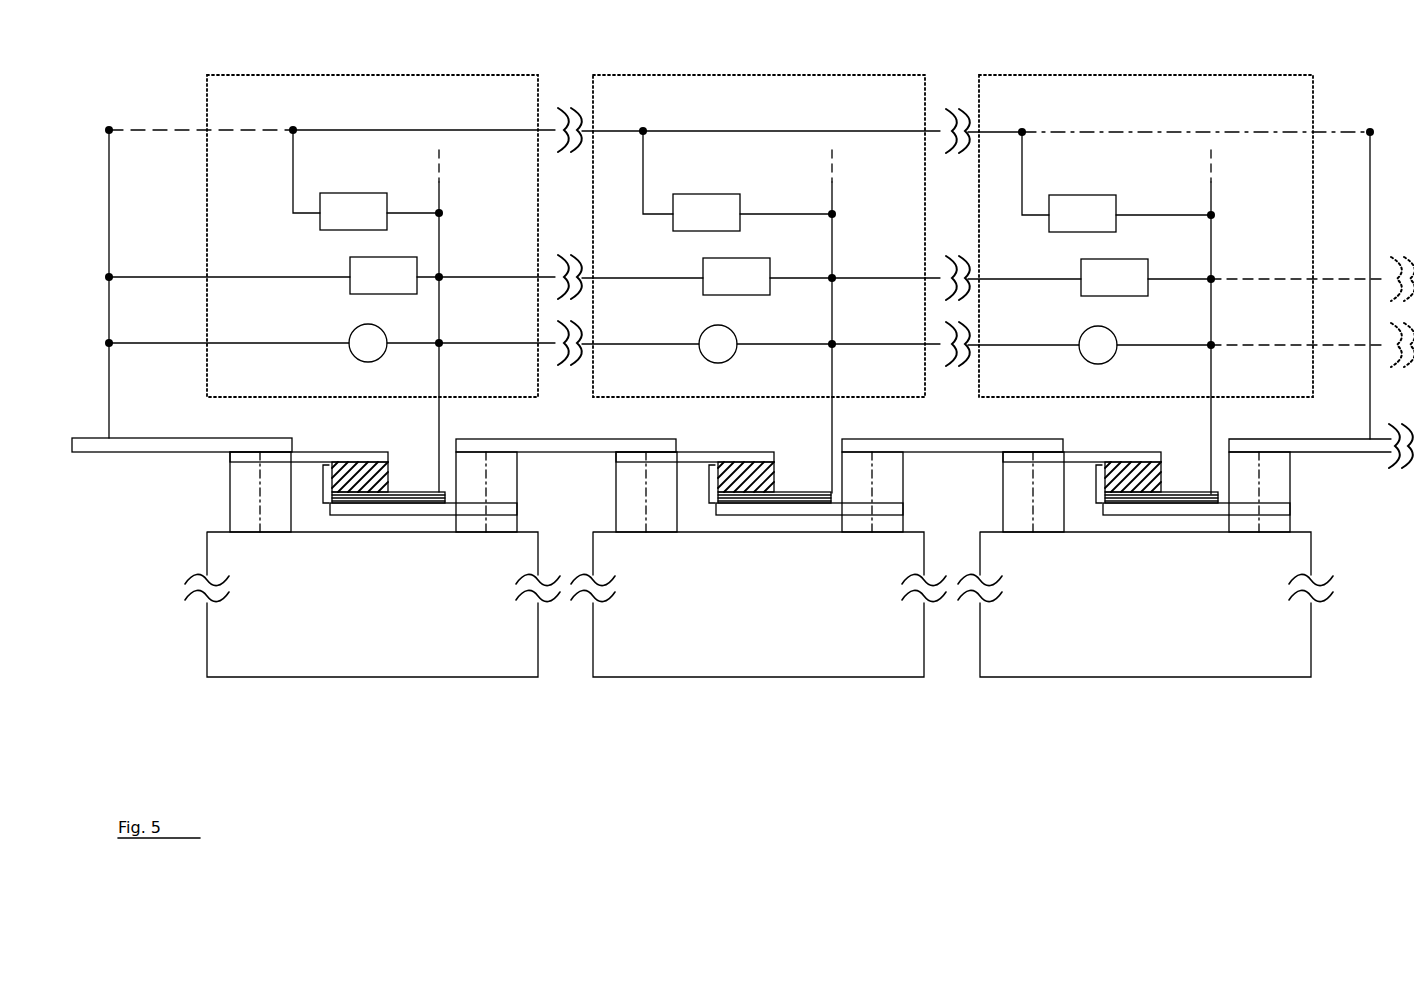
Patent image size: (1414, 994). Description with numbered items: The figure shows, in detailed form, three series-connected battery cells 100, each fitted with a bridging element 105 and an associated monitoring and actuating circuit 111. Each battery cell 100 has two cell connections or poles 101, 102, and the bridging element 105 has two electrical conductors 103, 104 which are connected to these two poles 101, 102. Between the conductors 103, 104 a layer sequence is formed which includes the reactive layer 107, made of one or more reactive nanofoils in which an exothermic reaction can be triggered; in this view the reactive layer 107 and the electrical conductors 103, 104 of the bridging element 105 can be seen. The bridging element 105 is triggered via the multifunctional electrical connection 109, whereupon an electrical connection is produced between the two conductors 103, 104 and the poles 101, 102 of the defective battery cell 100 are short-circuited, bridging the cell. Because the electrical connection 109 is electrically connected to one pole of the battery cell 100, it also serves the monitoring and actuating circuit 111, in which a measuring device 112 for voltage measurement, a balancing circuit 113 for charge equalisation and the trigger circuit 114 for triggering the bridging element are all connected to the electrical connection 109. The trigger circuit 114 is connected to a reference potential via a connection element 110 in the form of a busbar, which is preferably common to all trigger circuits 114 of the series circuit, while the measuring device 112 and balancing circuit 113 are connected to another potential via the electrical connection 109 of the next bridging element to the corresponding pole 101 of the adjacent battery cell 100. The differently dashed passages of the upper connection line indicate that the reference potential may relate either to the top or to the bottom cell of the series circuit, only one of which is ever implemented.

The battery cell 100 is at (262, 680).
The pole 101 is at (495, 534).
The pole 102 is at (236, 534).
The electrical conductor 103 is at (517, 512).
The electrical conductor 104 is at (338, 451).
The bridging element 105 is at (323, 486).
The reactive layer 107 is at (427, 492).
The electrical connection 109 is at (437, 410).
The connection element 110 is at (183, 438).
The monitoring and actuating circuit 111 is at (485, 73).
The measuring device 112 is at (355, 355).
The balancing circuit 113 is at (350, 294).
The trigger circuit 114 is at (346, 192).